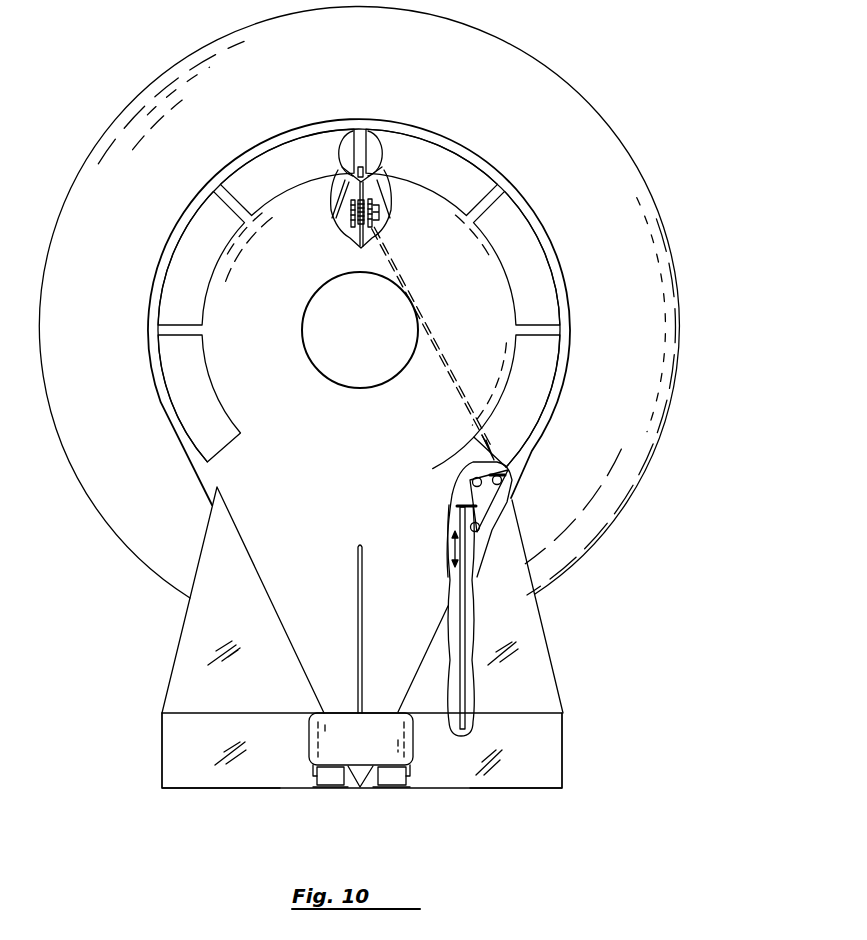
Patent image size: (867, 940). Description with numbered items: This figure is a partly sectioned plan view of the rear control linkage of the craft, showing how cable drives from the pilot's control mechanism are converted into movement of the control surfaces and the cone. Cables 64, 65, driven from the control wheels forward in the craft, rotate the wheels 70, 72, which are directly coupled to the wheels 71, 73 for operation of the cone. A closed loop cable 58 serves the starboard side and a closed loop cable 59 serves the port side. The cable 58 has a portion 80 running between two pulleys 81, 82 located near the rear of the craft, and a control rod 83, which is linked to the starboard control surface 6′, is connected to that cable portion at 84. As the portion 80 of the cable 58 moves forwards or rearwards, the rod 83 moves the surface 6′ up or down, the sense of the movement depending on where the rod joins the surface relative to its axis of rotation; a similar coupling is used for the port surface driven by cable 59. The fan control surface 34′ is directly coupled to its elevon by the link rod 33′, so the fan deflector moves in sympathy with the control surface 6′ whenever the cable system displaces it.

The closed loop cable system 58 is at (416, 266).
The closed loop cable 59 is at (340, 197).
The cable 64 is at (343, 167).
The cable 65 is at (380, 170).
The wheel 70 is at (379, 219).
The wheel 71 is at (375, 203).
The wheel 72 is at (352, 213).
The wheel 73 is at (358, 228).
The cable portion 80 is at (472, 490).
The pulley 81 is at (474, 481).
The pulley 82 is at (472, 524).
The control rod 83 is at (466, 569).
The connection 84 is at (507, 500).
The link rod 33′ is at (407, 786).
The fan control surface 34′ is at (390, 783).
The starboard control surface 6′ is at (505, 770).